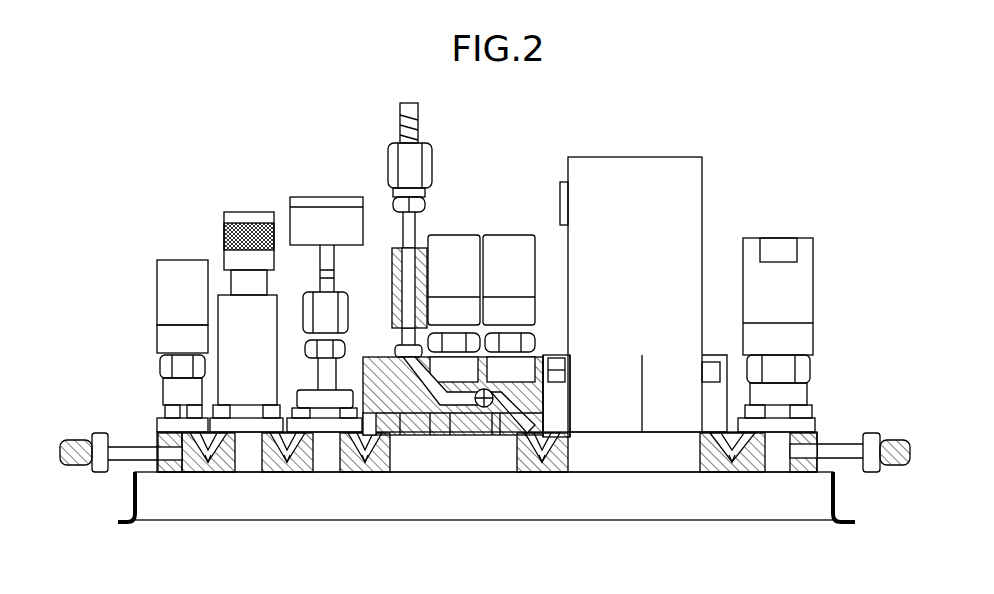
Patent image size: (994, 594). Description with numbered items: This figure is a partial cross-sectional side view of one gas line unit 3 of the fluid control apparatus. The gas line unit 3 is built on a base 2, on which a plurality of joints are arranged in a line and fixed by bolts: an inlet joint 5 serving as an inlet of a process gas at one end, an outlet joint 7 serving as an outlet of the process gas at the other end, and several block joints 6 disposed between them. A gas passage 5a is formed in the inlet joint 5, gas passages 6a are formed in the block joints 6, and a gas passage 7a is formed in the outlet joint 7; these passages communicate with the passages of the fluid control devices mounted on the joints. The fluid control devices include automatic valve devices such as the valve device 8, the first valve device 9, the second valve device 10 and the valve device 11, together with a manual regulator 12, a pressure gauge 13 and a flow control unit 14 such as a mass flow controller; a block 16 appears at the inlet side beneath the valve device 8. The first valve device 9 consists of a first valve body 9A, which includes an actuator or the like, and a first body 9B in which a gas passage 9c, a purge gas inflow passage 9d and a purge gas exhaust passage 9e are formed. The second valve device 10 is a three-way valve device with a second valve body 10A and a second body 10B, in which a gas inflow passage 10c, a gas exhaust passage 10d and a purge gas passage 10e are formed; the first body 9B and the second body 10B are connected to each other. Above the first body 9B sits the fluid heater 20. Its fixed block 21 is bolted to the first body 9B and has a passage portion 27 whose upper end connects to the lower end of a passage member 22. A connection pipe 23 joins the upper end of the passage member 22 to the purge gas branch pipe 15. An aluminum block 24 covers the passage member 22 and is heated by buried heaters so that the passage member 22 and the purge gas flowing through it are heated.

The base 2 is at (663, 505).
The gas line unit 3 is at (838, 198).
The inlet joint 5 is at (130, 447).
The gas passage 5a is at (166, 468).
The block joint 6 is at (196, 470).
The gas passage 6a is at (210, 462).
The outlet joint 7 is at (893, 445).
The gas passage 7a is at (815, 446).
The valve device 8 is at (185, 270).
The first valve device 9 is at (481, 253).
The first valve body 9A is at (450, 268).
The first body 9B is at (503, 272).
The gas passage 9c is at (400, 437).
The purge gas inflow passage 9d is at (430, 437).
The purge gas exhaust passage 9e is at (450, 437).
The second valve device 10 is at (534, 261).
The second valve body 10A is at (518, 250).
The second body 10B is at (540, 355).
The gas inflow passage 10c is at (500, 437).
The gas exhaust passage 10d is at (535, 437).
The purge gas passage 10e is at (492, 437).
The valve device 11 is at (800, 262).
The manual regulator 12 is at (245, 222).
The pressure gauge 13 is at (328, 200).
The flow control unit 14 is at (682, 182).
The purge gas branch pipe 15 is at (393, 156).
The block 16 is at (162, 418).
The fluid heater 20 is at (389, 230).
The fixed block 21 is at (396, 348).
The passage member 22 is at (397, 266).
The connection pipe 23 is at (408, 232).
The aluminum block 24 is at (393, 288).
The passage portion 27 is at (398, 342).